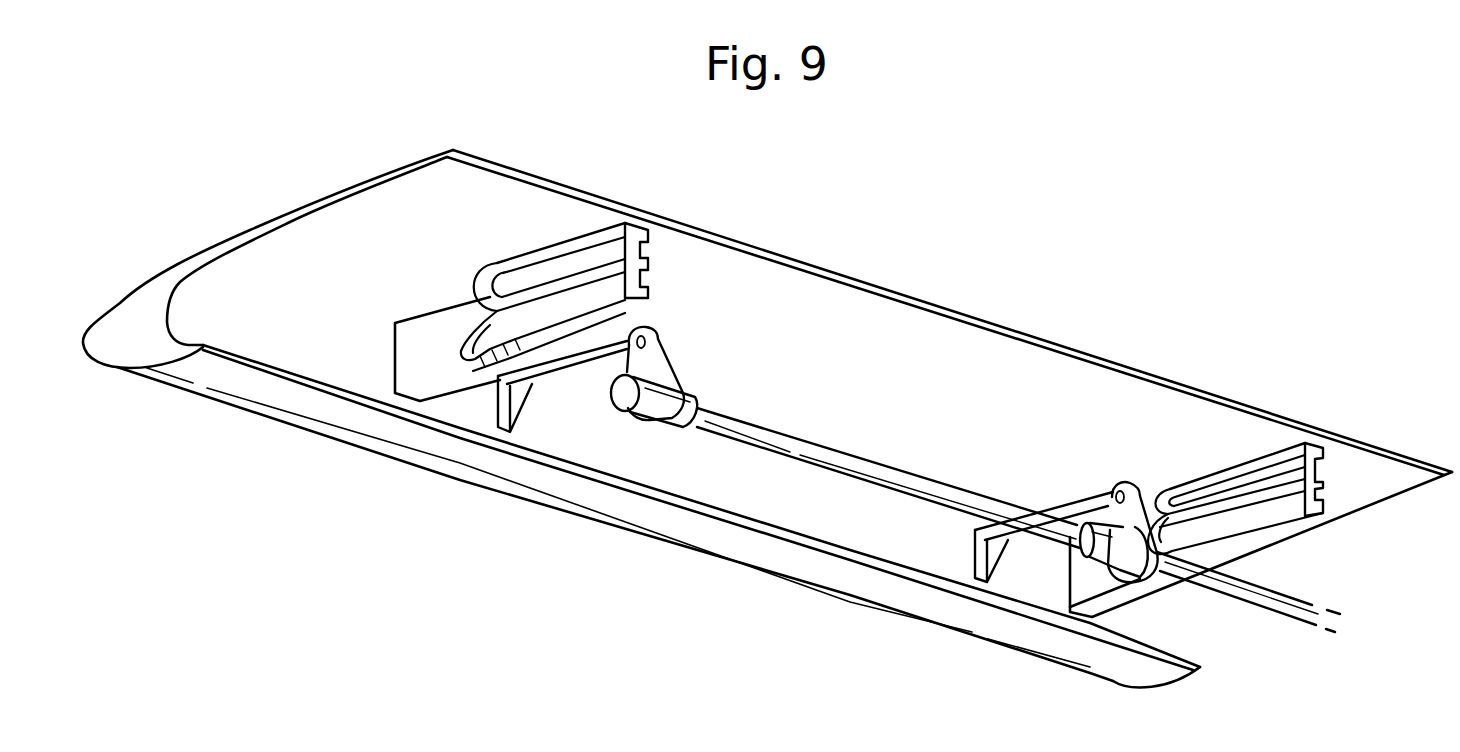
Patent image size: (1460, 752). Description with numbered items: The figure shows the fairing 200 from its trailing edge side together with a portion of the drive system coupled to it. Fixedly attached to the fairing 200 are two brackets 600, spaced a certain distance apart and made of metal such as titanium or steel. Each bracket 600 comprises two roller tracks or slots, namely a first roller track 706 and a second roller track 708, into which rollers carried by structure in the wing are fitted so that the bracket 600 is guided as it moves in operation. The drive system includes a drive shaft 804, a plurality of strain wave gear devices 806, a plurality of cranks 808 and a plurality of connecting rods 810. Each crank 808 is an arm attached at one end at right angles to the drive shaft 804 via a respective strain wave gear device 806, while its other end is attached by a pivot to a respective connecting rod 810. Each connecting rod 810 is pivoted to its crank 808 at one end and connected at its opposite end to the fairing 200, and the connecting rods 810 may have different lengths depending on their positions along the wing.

The fairing 200 is at (300, 205).
The bracket 600 is at (557, 243).
The first roller track 706 is at (492, 322).
The second roller track 708 is at (653, 245).
The drive shaft 804 is at (778, 453).
The strain wave gear device 806 is at (690, 393).
The crank 808 is at (663, 347).
The connecting rod 810 is at (557, 376).